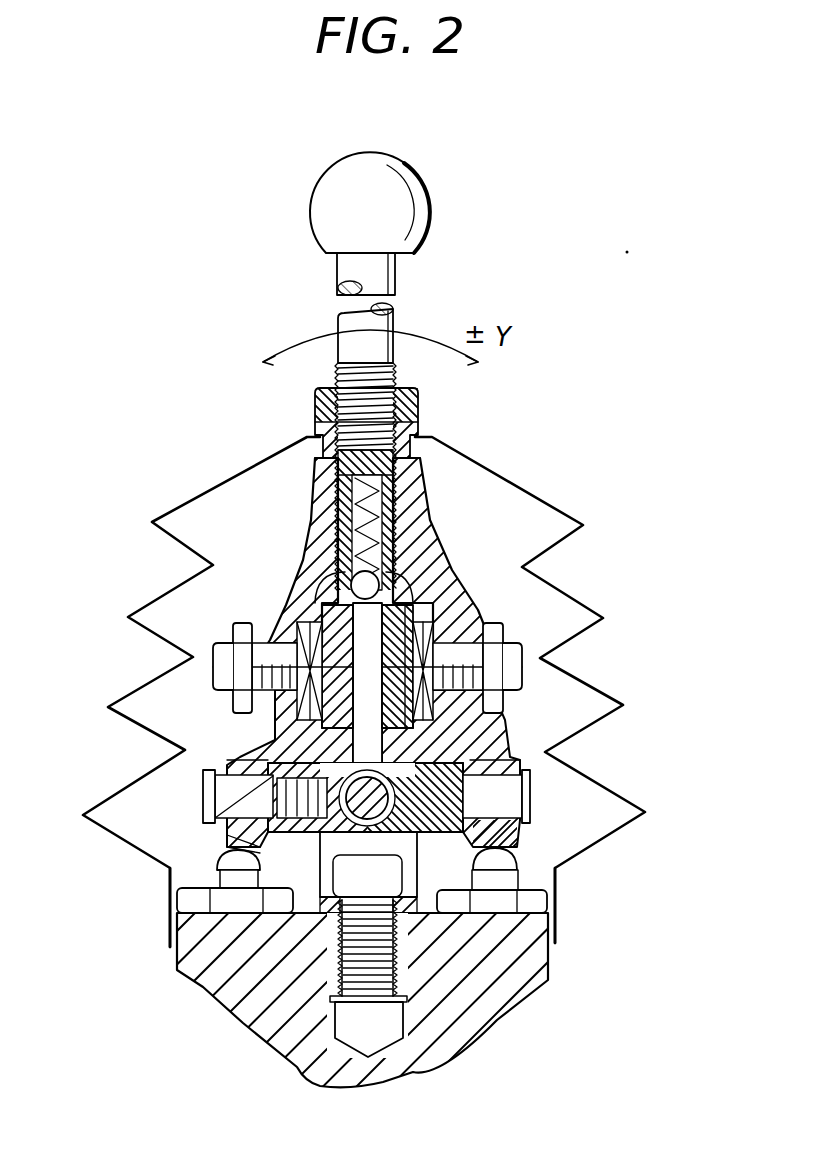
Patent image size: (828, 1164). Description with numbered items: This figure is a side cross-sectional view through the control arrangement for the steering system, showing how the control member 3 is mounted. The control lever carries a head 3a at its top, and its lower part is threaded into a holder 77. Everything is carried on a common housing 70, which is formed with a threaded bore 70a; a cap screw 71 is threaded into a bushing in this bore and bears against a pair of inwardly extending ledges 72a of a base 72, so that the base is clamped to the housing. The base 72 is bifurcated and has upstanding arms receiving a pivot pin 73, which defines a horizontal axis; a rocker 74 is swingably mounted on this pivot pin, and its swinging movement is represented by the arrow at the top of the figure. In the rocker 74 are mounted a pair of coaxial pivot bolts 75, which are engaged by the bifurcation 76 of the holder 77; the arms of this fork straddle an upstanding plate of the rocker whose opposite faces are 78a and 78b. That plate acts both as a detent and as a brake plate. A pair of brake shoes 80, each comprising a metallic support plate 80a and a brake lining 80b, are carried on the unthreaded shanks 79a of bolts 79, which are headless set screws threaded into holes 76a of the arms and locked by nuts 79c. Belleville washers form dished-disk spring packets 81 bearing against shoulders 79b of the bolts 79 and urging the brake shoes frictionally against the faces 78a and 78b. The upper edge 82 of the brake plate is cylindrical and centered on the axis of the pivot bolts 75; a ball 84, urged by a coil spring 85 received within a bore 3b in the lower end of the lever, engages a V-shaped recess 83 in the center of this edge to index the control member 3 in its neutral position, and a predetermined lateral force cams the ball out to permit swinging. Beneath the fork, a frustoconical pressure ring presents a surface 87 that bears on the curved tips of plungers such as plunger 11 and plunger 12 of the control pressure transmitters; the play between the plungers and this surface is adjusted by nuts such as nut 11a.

The head of the control lever 3a is at (398, 217).
The control member 3 is at (378, 269).
The bore 3b is at (343, 500).
The holder 77 is at (413, 480).
The face of the plate 78a is at (500, 748).
The face of the plate 78b is at (420, 722).
The upper edge of the brake plate 82 is at (430, 569).
The coil spring 85 is at (367, 520).
The ball 84 is at (393, 547).
The V-shaped recess 83 is at (352, 583).
The rocker 74 is at (437, 776).
The spring packets 81 is at (397, 626).
The brake shoes 80 is at (425, 628).
The bolts 79 is at (303, 665).
The unthreaded shanks 79a is at (213, 720).
The shoulders of the bolts 79b is at (500, 650).
The nuts 79c is at (237, 705).
The holes 76a is at (233, 628).
The bifurcation of the holder 76 is at (528, 800).
The pivot pin 73 is at (388, 795).
The pivot bolts 75 is at (227, 790).
The surface 87 is at (170, 888).
The metallic support plate 80a is at (220, 837).
The brake lining 80b is at (220, 843).
The base 72 is at (422, 900).
The inwardly extending ledges 72a is at (318, 916).
The housing 70 is at (493, 962).
The threaded bore 70a is at (347, 960).
The cap screw 71 is at (398, 967).
The plunger 11 is at (235, 881).
The nut 11a is at (218, 913).
The plunger 12 is at (497, 860).